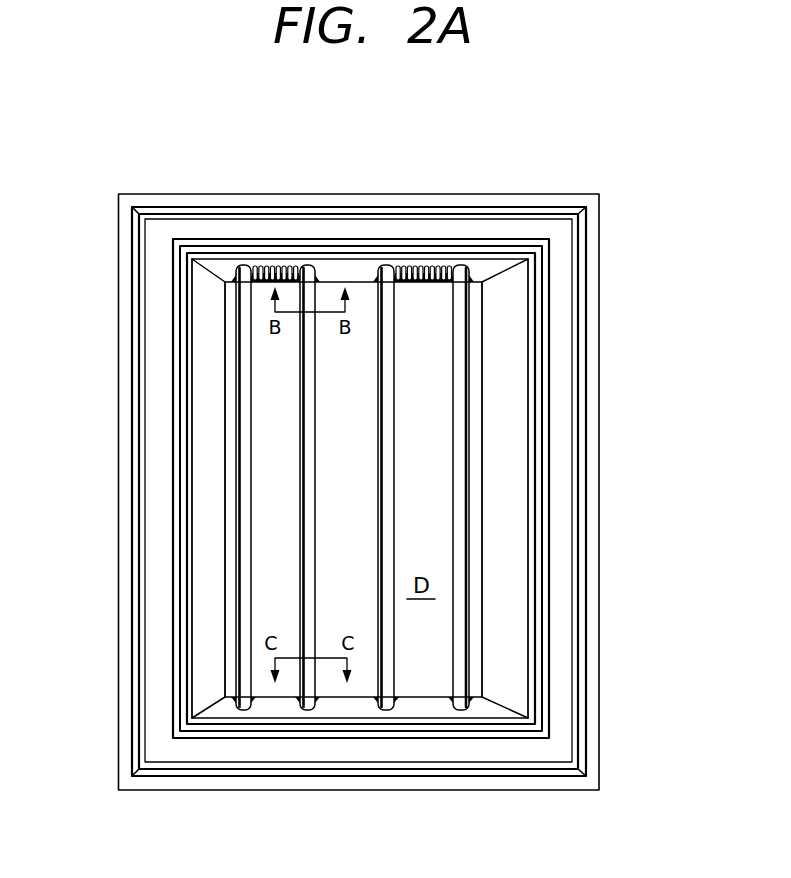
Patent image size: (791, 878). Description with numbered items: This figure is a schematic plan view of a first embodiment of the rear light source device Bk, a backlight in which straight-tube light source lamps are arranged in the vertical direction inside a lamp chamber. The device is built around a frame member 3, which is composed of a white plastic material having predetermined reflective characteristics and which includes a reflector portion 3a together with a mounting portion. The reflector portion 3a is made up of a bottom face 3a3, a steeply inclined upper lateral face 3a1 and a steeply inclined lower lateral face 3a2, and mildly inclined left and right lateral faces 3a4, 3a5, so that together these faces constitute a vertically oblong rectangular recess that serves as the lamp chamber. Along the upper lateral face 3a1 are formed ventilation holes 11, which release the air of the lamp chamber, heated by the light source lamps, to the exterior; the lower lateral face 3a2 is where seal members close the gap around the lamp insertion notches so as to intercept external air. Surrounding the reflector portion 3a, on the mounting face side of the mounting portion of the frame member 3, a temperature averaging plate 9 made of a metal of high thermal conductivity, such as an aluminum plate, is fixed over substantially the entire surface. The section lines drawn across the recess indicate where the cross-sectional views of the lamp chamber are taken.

The rear light source device Bk is at (218, 190).
The frame member 3 is at (539, 184).
The temperature averaging plate 9 is at (570, 298).
The ventilation holes 11 is at (357, 265).
The reflector portion 3a is at (440, 523).
The upper lateral face 3a1 is at (480, 268).
The lower lateral face 3a2 is at (430, 708).
The bottom face 3a3 is at (435, 430).
The left lateral face 3a4 is at (205, 490).
The right lateral face 3a5 is at (512, 640).